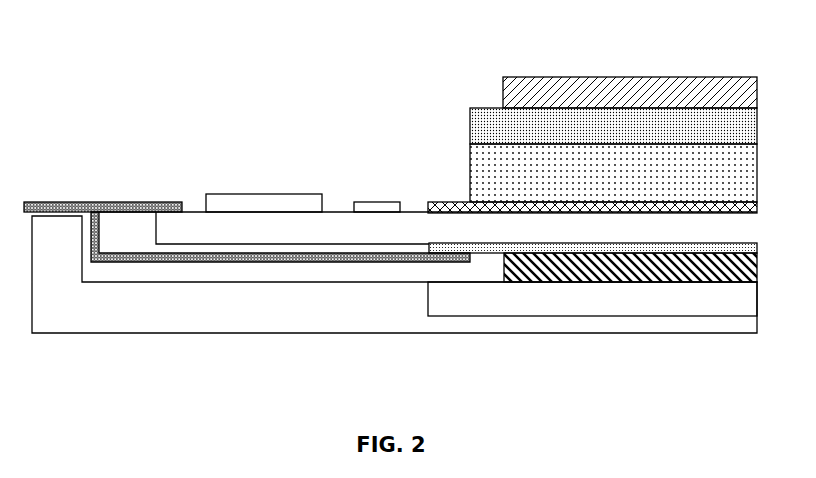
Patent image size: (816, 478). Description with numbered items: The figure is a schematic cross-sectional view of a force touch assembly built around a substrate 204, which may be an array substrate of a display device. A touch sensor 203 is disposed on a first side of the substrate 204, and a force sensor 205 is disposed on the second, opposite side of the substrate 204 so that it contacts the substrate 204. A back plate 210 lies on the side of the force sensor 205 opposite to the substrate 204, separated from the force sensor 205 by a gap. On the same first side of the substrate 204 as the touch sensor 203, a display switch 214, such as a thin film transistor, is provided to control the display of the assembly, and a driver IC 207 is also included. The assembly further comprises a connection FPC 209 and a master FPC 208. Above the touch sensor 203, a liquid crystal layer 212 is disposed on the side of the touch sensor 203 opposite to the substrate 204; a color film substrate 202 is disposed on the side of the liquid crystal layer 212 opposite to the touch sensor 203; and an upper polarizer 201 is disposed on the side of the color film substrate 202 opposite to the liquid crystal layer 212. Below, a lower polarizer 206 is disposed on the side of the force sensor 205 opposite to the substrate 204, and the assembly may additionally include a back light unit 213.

The upper polarizer 201 is at (526, 93).
The color film substrate 202 is at (488, 128).
The liquid crystal layer 212 is at (490, 175).
The touch sensor 203 is at (445, 207).
The substrate 204 is at (175, 228).
The force sensor 205 is at (443, 248).
The lower polarizer 206 is at (520, 270).
The driver IC 207 is at (265, 201).
The master FPC 208 is at (132, 208).
The connection FPC 209 is at (308, 257).
The back plate 210 is at (217, 316).
The back light unit 213 is at (482, 305).
The display switch 214 is at (387, 200).